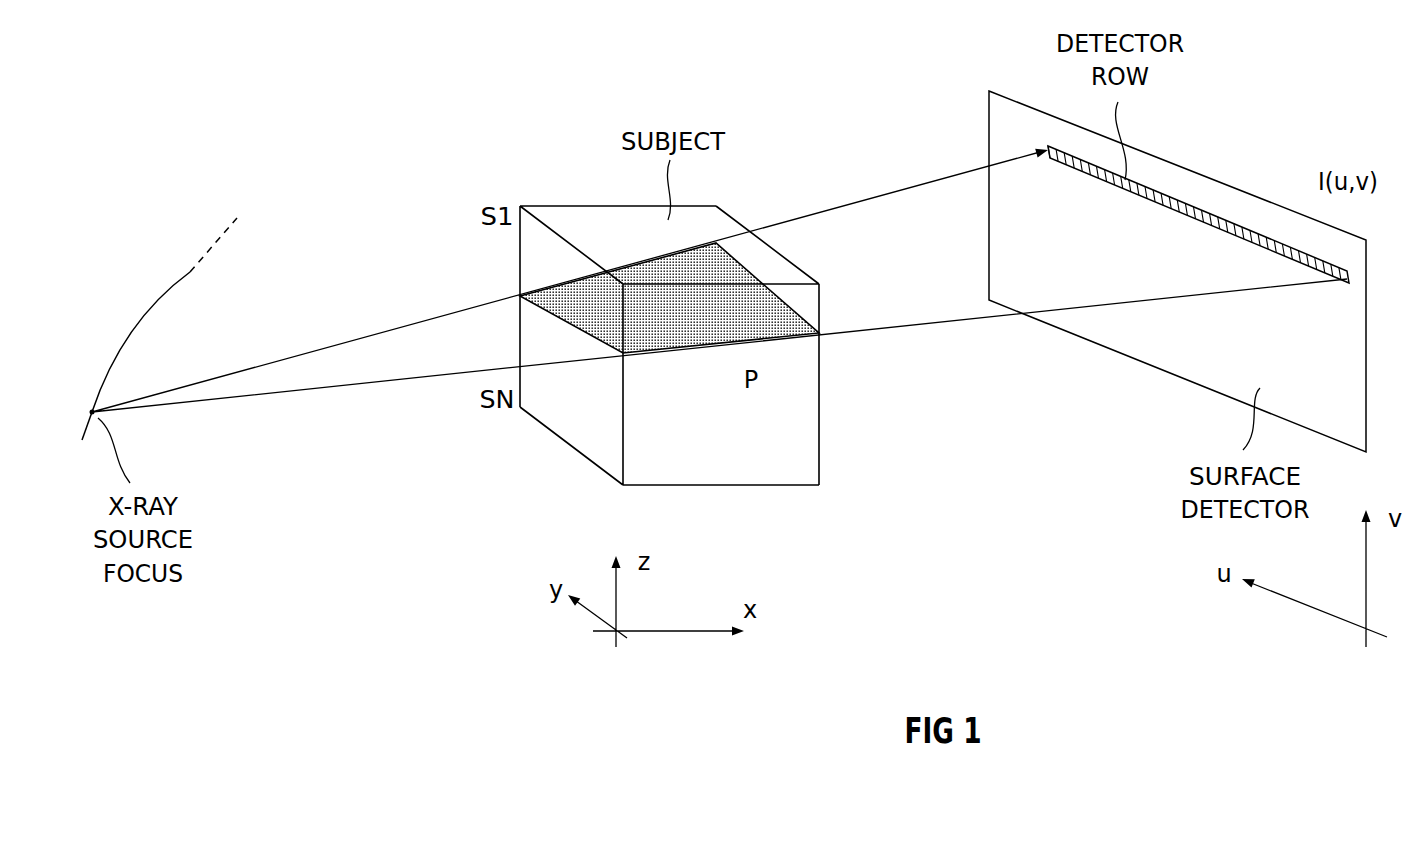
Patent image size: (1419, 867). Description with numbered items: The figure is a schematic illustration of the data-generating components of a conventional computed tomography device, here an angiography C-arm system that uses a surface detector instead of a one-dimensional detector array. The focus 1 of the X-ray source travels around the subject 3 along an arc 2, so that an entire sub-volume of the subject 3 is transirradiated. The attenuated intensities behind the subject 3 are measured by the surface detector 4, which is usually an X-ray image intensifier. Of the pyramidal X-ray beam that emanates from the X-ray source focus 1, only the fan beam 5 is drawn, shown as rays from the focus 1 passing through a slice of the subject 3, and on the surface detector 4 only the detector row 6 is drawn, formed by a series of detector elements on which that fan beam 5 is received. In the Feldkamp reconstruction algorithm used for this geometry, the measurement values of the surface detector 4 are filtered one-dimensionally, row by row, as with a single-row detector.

The focus of an X-ray source 1 is at (90, 400).
The arc 2 is at (160, 307).
The subject 3 is at (592, 222).
The surface detector 4 is at (1183, 358).
The fan beam 5 is at (372, 382).
The detector row 6 is at (1207, 220).